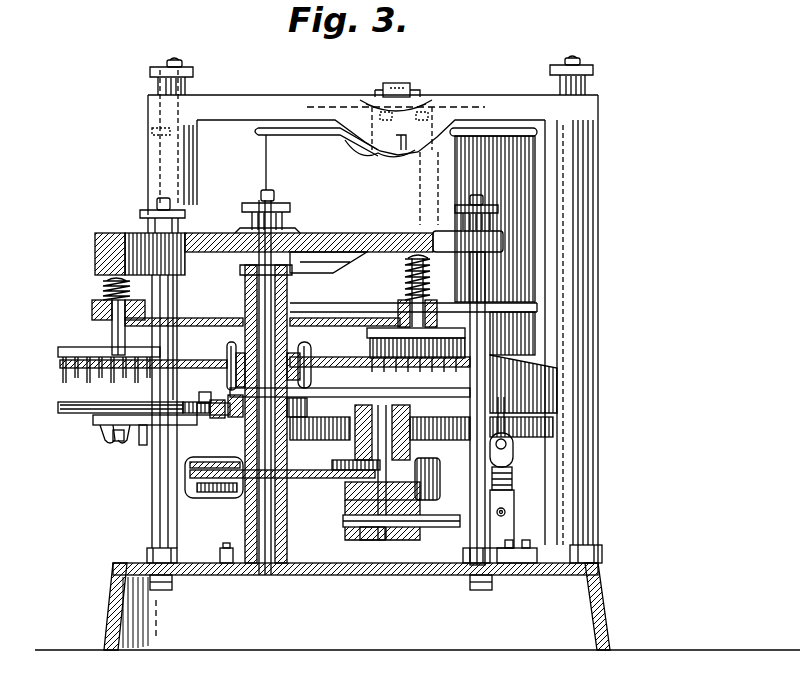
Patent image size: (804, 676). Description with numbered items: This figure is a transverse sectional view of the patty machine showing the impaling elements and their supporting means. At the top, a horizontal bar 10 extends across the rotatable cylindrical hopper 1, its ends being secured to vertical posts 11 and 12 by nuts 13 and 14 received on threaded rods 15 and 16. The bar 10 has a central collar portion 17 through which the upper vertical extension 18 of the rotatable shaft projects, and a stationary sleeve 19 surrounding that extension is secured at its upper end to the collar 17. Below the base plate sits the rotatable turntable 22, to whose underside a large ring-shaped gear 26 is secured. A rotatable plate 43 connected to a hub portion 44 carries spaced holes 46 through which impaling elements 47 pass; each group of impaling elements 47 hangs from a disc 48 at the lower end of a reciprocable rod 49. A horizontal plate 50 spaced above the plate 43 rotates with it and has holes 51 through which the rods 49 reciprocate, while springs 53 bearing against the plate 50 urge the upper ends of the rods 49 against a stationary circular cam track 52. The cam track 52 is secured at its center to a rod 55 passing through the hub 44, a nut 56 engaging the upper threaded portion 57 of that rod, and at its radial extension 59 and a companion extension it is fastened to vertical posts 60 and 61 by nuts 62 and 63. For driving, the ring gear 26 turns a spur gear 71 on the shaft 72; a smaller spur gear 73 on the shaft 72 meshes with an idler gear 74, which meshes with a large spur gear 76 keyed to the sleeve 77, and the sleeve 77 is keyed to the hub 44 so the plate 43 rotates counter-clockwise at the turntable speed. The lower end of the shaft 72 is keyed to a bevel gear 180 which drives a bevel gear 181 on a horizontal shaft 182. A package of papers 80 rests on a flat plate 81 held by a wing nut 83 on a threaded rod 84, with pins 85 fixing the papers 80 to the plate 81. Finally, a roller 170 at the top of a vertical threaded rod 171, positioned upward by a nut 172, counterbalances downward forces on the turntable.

The rotatable cylindrical hopper 1 is at (265, 152).
The horizontal bar 10 is at (505, 98).
The vertical post 11 is at (150, 163).
The vertical post 12 is at (598, 173).
The nut 13 is at (157, 80).
The nut 14 is at (591, 89).
The threaded rod 15 is at (176, 60).
The threaded rod 16 is at (572, 59).
The central collar portion 17 is at (428, 104).
The upper vertical extension of the rotatable shaft 18 is at (396, 84).
The stationary sleeve 19 is at (422, 153).
The rotatable turntable 22 is at (557, 395).
The ring-shaped gear 26 is at (553, 424).
The rotatable plate 43 is at (330, 357).
The hub portion 44 is at (232, 344).
The holes 46 is at (64, 368).
The impaling element 47 is at (125, 378).
The disc 48 is at (66, 350).
The reciprocable rod 49 is at (112, 338).
The horizontal plate 50 is at (205, 318).
The holes 51 is at (92, 312).
The stationary circular cam track 52 is at (95, 252).
The spring 53 is at (103, 292).
The rod 55 is at (266, 570).
The nut 56 is at (283, 219).
The upper threaded portion 57 is at (274, 196).
The radial extension 59 is at (503, 242).
The vertical post 60 is at (174, 297).
The vertical post 61 is at (486, 281).
The threaded nut 62 is at (140, 220).
The threaded nut 63 is at (490, 206).
The spur gear 71 is at (406, 430).
The shaft 72 is at (375, 456).
The smaller spur gear 73 is at (428, 466).
The idler gear 74 is at (350, 511).
The large spur gear 76 is at (206, 496).
The sleeve 77 is at (245, 432).
The package of papers 80 is at (62, 401).
The flat plate 81 is at (70, 413).
The wing nut 83 is at (105, 434).
The threaded rod 84 is at (116, 442).
The pins 85 is at (142, 446).
The roller 170 is at (513, 450).
The vertical threaded rod 171 is at (512, 478).
The nut 172 is at (514, 498).
The bevel gear 180 is at (400, 540).
The bevel gear 181 is at (383, 540).
The horizontal shaft 182 is at (442, 527).